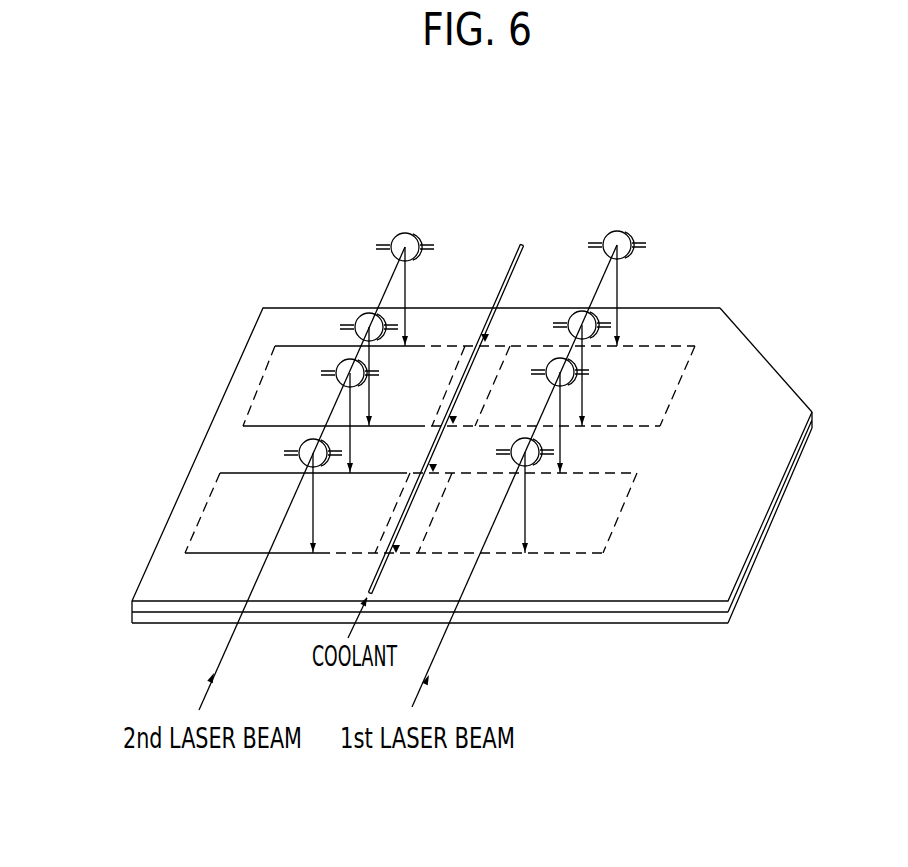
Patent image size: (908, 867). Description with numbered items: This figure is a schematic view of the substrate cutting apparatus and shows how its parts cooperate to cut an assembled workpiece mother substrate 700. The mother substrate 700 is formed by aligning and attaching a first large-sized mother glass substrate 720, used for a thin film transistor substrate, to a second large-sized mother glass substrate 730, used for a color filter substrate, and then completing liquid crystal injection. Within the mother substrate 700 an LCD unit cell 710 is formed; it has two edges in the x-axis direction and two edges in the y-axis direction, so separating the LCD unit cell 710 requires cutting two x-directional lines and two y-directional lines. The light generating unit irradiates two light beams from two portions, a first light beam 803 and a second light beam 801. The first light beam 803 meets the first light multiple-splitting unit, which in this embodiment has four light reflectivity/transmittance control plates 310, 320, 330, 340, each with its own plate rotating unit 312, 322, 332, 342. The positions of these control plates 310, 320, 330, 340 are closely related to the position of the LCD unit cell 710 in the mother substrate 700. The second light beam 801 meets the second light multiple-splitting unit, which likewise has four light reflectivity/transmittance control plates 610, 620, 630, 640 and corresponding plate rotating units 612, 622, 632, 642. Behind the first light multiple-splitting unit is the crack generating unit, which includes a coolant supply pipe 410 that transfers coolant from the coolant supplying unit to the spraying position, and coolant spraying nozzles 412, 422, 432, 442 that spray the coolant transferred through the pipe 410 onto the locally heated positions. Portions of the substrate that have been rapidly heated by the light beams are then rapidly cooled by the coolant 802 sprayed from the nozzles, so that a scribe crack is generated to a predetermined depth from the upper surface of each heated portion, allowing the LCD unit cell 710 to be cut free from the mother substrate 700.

The light reflectivity/transmittance control plate 310 is at (620, 232).
The plate rotating unit 312 is at (633, 240).
The light reflectivity/transmittance control plate 320 is at (580, 311).
The plate rotating unit 322 is at (612, 326).
The light reflectivity/transmittance control plate 330 is at (552, 382).
The plate rotating unit 332 is at (572, 382).
The light reflectivity/transmittance control plate 340 is at (520, 460).
The plate rotating unit 342 is at (540, 463).
The coolant supply pipe 410 is at (517, 252).
The coolant spraying nozzle 412 is at (487, 340).
The coolant spraying nozzle 422 is at (455, 428).
The coolant spraying nozzle 432 is at (432, 467).
The coolant spraying nozzle 442 is at (396, 556).
The light reflectivity/transmittance control plate 610 is at (400, 233).
The plate rotating unit 612 is at (432, 227).
The light reflectivity/transmittance control plate 620 is at (364, 313).
The plate rotating unit 622 is at (383, 338).
The light reflectivity/transmittance control plate 630 is at (328, 372).
The plate rotating unit 632 is at (362, 386).
The light reflectivity/transmittance control plate 640 is at (303, 444).
The plate rotating unit 642 is at (327, 468).
The assembled workpiece mother substrate 700 is at (496, 486).
The LCD unit cell 710 is at (688, 348).
The first large-sized mother glass substrate 720 is at (755, 348).
The second large-sized mother glass substrate 730 is at (812, 430).
The second light beam 801 is at (225, 646).
The coolant 802 is at (585, 553).
The first light beam 803 is at (442, 647).